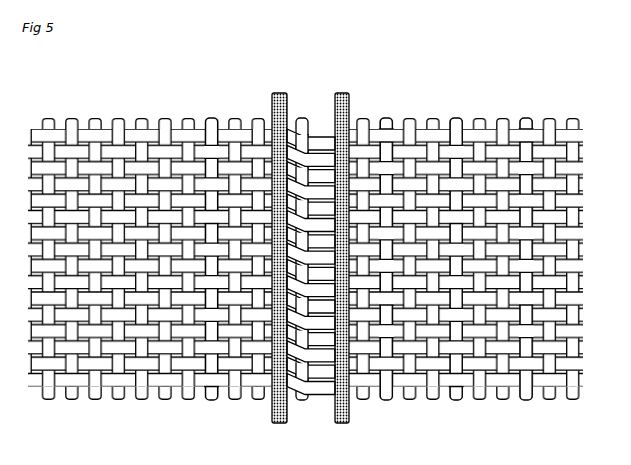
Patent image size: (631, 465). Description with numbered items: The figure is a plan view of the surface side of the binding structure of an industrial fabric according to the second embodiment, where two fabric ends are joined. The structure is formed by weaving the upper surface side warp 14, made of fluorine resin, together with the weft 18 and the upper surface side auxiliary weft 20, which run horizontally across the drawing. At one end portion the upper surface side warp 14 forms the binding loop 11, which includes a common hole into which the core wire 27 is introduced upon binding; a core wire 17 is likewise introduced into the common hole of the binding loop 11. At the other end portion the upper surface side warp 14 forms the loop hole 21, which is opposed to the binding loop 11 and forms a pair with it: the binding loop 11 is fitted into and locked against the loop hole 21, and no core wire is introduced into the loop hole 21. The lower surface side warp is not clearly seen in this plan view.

The binding loop 11 is at (387, 123).
The upper surface side warp 14 is at (207, 132).
The core wire 17 is at (352, 103).
The weft 18 is at (525, 123).
The upper surface side auxiliary weft 20 is at (463, 127).
The loop hole 21 is at (317, 132).
The core wire 27 is at (272, 102).